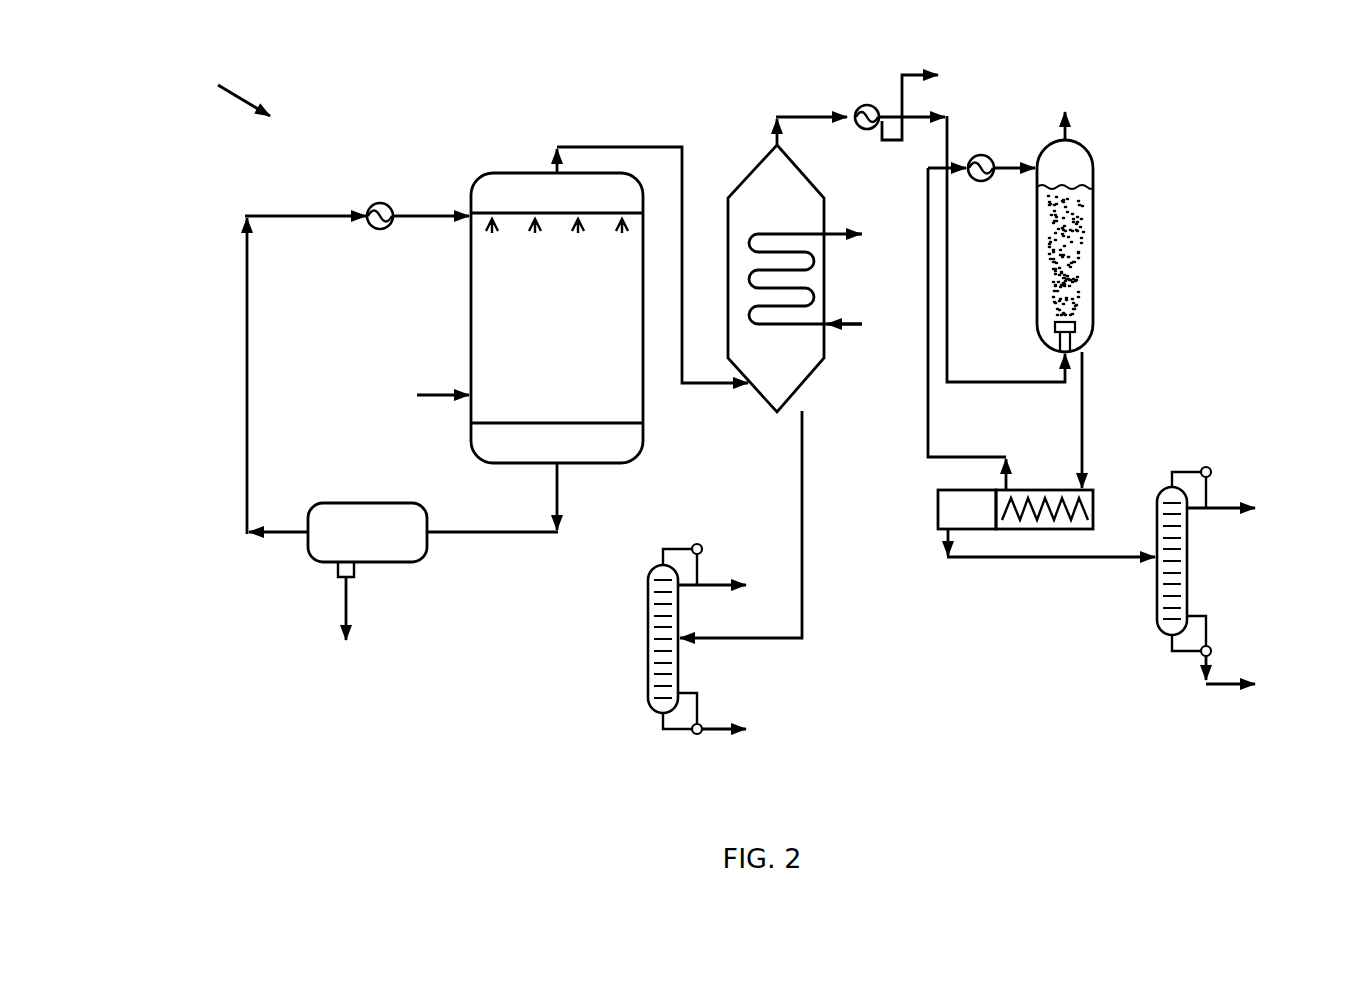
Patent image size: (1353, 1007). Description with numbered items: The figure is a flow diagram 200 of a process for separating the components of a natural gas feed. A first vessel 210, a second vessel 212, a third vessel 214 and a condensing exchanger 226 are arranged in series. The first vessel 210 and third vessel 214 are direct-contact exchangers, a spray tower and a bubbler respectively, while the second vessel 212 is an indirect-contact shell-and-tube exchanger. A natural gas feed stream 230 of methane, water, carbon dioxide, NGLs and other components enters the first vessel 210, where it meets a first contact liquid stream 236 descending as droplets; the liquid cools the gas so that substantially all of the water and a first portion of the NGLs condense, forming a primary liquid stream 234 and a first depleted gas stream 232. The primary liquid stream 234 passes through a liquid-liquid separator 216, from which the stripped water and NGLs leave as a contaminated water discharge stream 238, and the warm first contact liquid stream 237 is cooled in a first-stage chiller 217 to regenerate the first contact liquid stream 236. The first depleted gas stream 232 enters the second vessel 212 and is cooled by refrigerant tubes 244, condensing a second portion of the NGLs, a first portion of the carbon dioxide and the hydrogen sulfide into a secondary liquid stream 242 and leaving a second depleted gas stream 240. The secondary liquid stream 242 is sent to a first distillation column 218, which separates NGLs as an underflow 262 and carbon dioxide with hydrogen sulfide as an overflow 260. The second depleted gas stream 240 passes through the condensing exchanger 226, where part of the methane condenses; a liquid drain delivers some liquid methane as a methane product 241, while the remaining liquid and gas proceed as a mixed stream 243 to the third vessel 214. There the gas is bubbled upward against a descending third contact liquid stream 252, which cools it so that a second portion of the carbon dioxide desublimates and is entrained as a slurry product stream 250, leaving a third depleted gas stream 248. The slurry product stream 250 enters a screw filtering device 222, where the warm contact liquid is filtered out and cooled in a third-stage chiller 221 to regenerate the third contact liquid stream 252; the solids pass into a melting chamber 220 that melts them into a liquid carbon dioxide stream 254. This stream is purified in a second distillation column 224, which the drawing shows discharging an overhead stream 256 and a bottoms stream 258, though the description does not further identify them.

The flow diagram 200 is at (214, 87).
The first vessel 210 is at (471, 318).
The second vessel 212 is at (824, 198).
The third vessel 214 is at (1093, 238).
The liquid-liquid separator 216 is at (316, 562).
The first-stage chiller 217 is at (372, 206).
The first distillation column 218 is at (648, 672).
The melting chamber 220 is at (938, 505).
The third-stage chiller 221 is at (981, 182).
The screw filtering device 222 is at (1093, 500).
The second distillation column 224 is at (1187, 572).
The condensing exchanger 226 is at (862, 106).
The natural gas feed stream 230 is at (415, 393).
The first depleted gas stream 232 is at (652, 247).
The primary liquid stream 234 is at (492, 513).
The first contact liquid stream 236 is at (431, 197).
The warm first contact liquid stream 237 is at (305, 375).
The contaminated water discharge stream 238 is at (348, 627).
The second depleted gas stream 240 is at (808, 114).
The methane product 241 is at (936, 98).
The secondary liquid stream 242 is at (768, 520).
The mixed stream 243 is at (972, 249).
The refrigerant tubes 244 is at (814, 262).
The third depleted gas stream 248 is at (1062, 108).
The slurry product stream 250 is at (1109, 420).
The third contact liquid stream 252 is at (982, 153).
The liquid carbon dioxide stream 254 is at (1049, 560).
The overhead product stream 256 is at (1240, 495).
The bottoms product stream 258 is at (1240, 658).
The overflow 260 is at (731, 572).
The underflow 262 is at (737, 718).